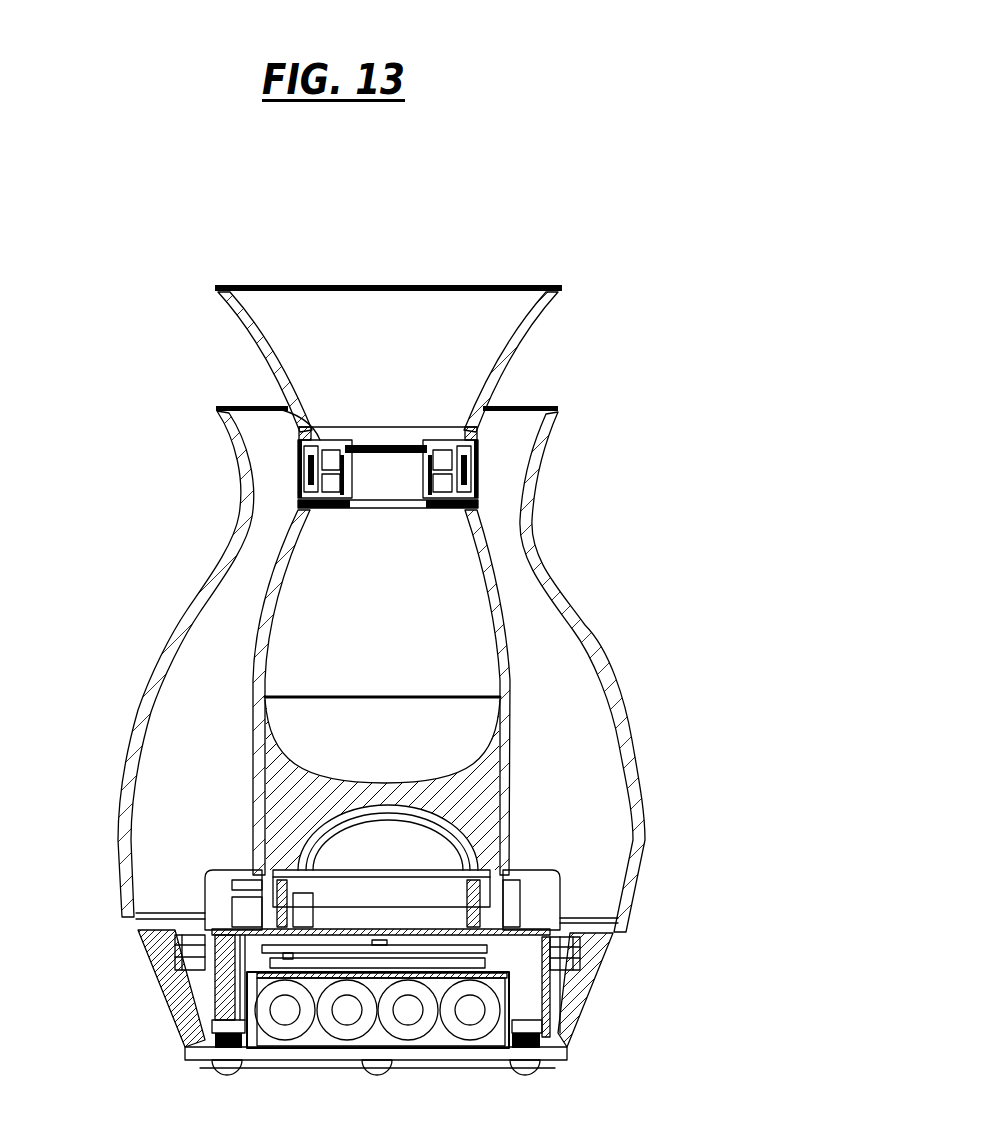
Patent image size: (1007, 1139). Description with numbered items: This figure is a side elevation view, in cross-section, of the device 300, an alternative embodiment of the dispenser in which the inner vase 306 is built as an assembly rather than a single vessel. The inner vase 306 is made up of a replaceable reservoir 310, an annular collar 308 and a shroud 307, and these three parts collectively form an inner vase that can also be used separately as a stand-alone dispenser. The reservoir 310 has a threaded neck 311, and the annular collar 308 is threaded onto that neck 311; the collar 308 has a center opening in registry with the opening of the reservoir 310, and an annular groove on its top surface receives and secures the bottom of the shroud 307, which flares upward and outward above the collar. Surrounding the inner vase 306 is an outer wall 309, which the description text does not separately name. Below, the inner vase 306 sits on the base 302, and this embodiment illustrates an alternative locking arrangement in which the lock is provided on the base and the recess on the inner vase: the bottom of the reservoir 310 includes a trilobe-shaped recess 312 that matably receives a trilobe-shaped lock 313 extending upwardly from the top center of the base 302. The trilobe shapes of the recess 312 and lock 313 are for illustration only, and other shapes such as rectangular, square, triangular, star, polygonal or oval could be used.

The diffuser device 300 is at (637, 492).
The base 302 is at (560, 900).
The inner vase 306 is at (390, 262).
The shroud 307 is at (543, 326).
The annular collar 308 is at (478, 460).
The outer body shell 309 is at (600, 660).
The reservoir 310 is at (264, 580).
The threaded neck 311 is at (235, 410).
The trilobe-shaped recess 312 is at (508, 748).
The trilobe-shaped lock 313 is at (500, 818).